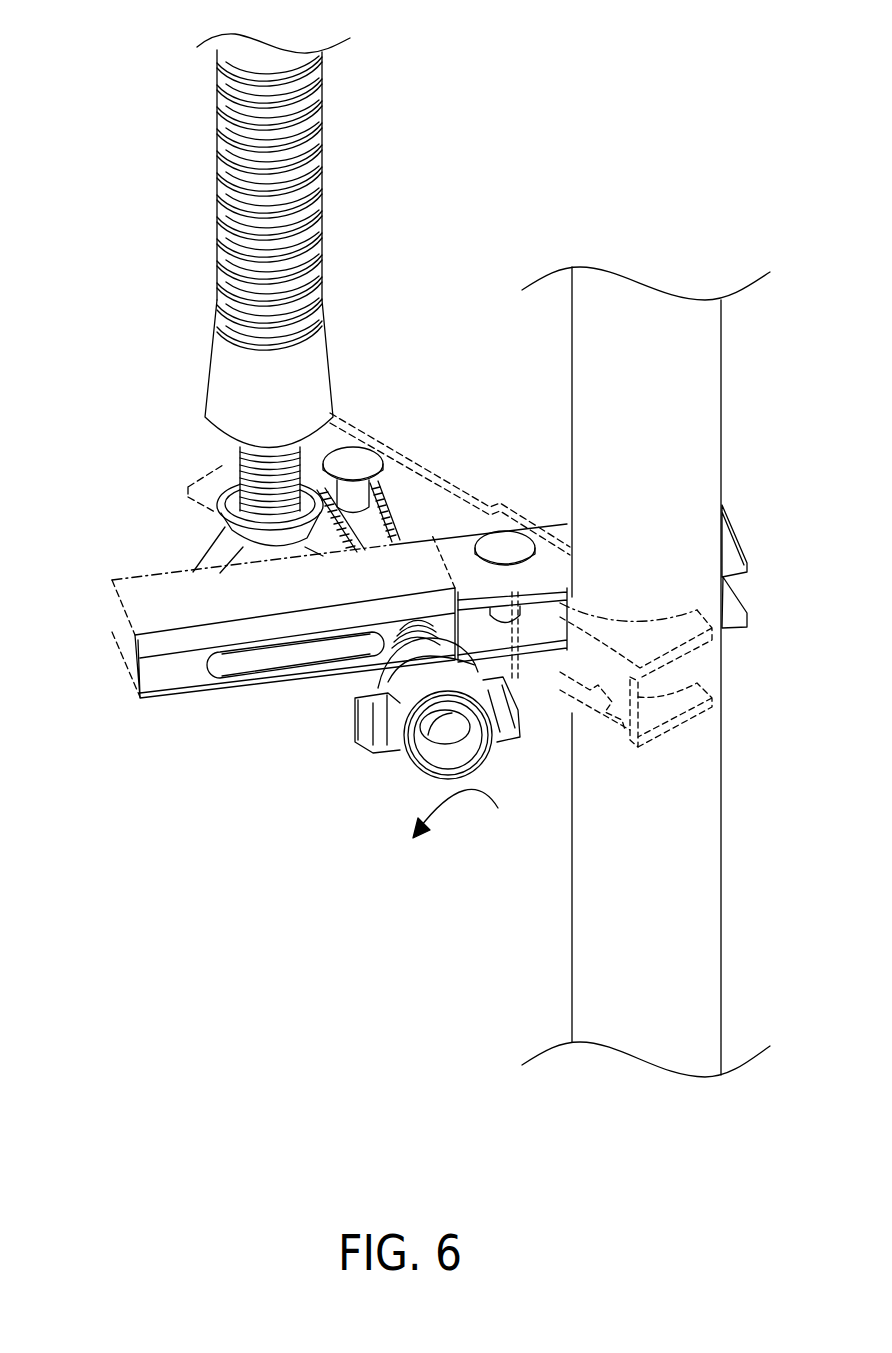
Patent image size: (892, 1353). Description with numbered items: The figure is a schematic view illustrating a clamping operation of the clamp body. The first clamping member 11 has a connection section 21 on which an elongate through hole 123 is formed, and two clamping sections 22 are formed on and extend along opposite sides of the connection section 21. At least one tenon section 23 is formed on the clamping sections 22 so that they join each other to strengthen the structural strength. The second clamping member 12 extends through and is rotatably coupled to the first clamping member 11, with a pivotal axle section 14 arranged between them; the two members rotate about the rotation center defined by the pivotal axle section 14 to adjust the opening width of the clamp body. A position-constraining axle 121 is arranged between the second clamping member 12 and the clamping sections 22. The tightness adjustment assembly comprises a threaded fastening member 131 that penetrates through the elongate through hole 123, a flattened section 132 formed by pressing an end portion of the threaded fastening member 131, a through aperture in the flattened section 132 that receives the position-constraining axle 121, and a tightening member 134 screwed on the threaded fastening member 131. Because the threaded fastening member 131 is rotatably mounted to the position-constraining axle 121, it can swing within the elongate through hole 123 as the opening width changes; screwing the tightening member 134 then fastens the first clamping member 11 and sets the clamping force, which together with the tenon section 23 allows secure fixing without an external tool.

The first clamping member 11 is at (273, 192).
The second clamping member 12 is at (341, 499).
The position-constraining axle 121 is at (352, 447).
The elongate through hole 123 is at (252, 673).
The flattened section 132 is at (372, 530).
The pivotal axle section 14 is at (507, 531).
The threaded fastening member 131 is at (365, 656).
The tightening member 134 is at (407, 766).
The connection section 21 is at (646, 672).
The clamping section 22 is at (703, 617).
The tenon section 23 is at (600, 703).